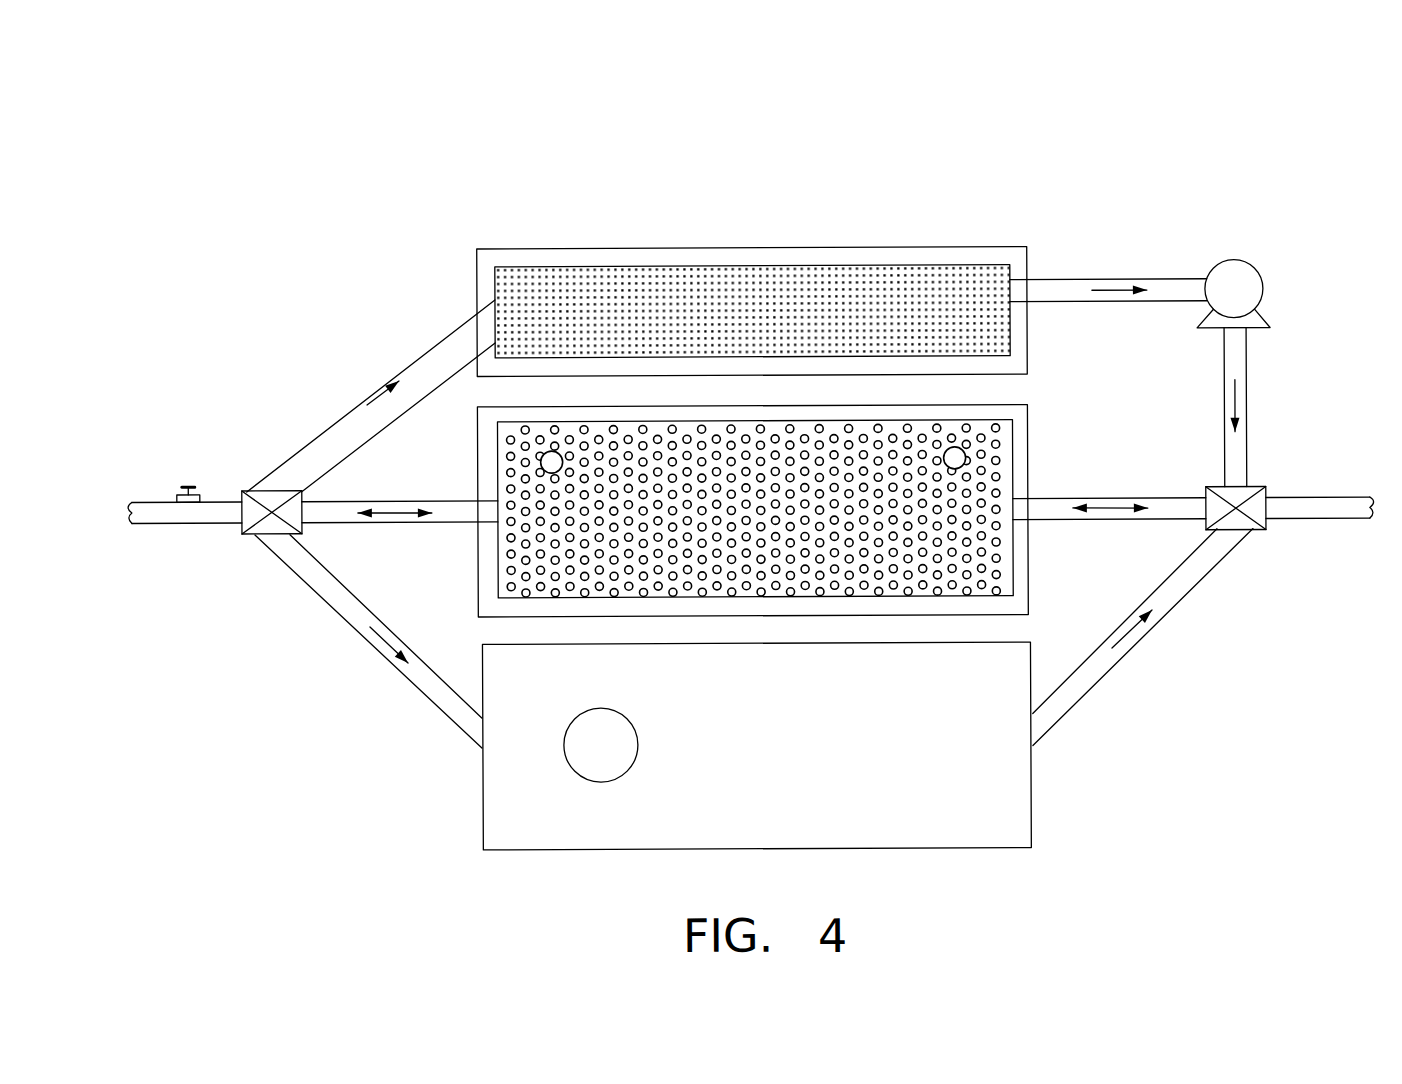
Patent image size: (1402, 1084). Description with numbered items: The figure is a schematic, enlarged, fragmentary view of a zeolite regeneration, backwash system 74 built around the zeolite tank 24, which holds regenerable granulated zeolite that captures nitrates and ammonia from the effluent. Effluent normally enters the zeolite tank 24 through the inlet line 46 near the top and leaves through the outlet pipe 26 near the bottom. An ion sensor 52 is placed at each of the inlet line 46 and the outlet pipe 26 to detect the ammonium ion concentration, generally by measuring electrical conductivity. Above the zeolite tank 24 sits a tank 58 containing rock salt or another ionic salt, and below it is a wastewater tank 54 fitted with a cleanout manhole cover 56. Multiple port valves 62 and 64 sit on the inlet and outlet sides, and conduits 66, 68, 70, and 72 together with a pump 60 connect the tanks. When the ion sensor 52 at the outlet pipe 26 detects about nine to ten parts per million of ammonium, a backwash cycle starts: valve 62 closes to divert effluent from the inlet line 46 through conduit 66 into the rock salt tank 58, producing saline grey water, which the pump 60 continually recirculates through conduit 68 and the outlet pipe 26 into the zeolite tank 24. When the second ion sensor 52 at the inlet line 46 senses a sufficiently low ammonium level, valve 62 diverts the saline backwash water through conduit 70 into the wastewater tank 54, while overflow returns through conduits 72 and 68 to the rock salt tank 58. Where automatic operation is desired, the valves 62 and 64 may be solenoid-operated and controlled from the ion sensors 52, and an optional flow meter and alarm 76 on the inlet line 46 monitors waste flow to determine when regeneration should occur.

The backwash system 74 is at (438, 181).
The rock salt tank 58 is at (614, 249).
The zeolite tank 24 is at (1029, 441).
The ion sensor 52 is at (541, 457).
The wastewater tank 54 is at (1031, 792).
The cleanout manhole cover 56 is at (602, 782).
The inlet line 46 is at (140, 500).
The flow meter and alarm 76 is at (176, 492).
The multiple port valve 62 is at (258, 532).
The conduit 66 is at (417, 359).
The conduit 70 is at (340, 613).
The conduit 68 is at (1083, 281).
The pump 60 is at (1256, 264).
The multiple port valve 64 is at (1255, 532).
The outlet pipe 26 is at (1295, 500).
The conduit 72 is at (1118, 662).